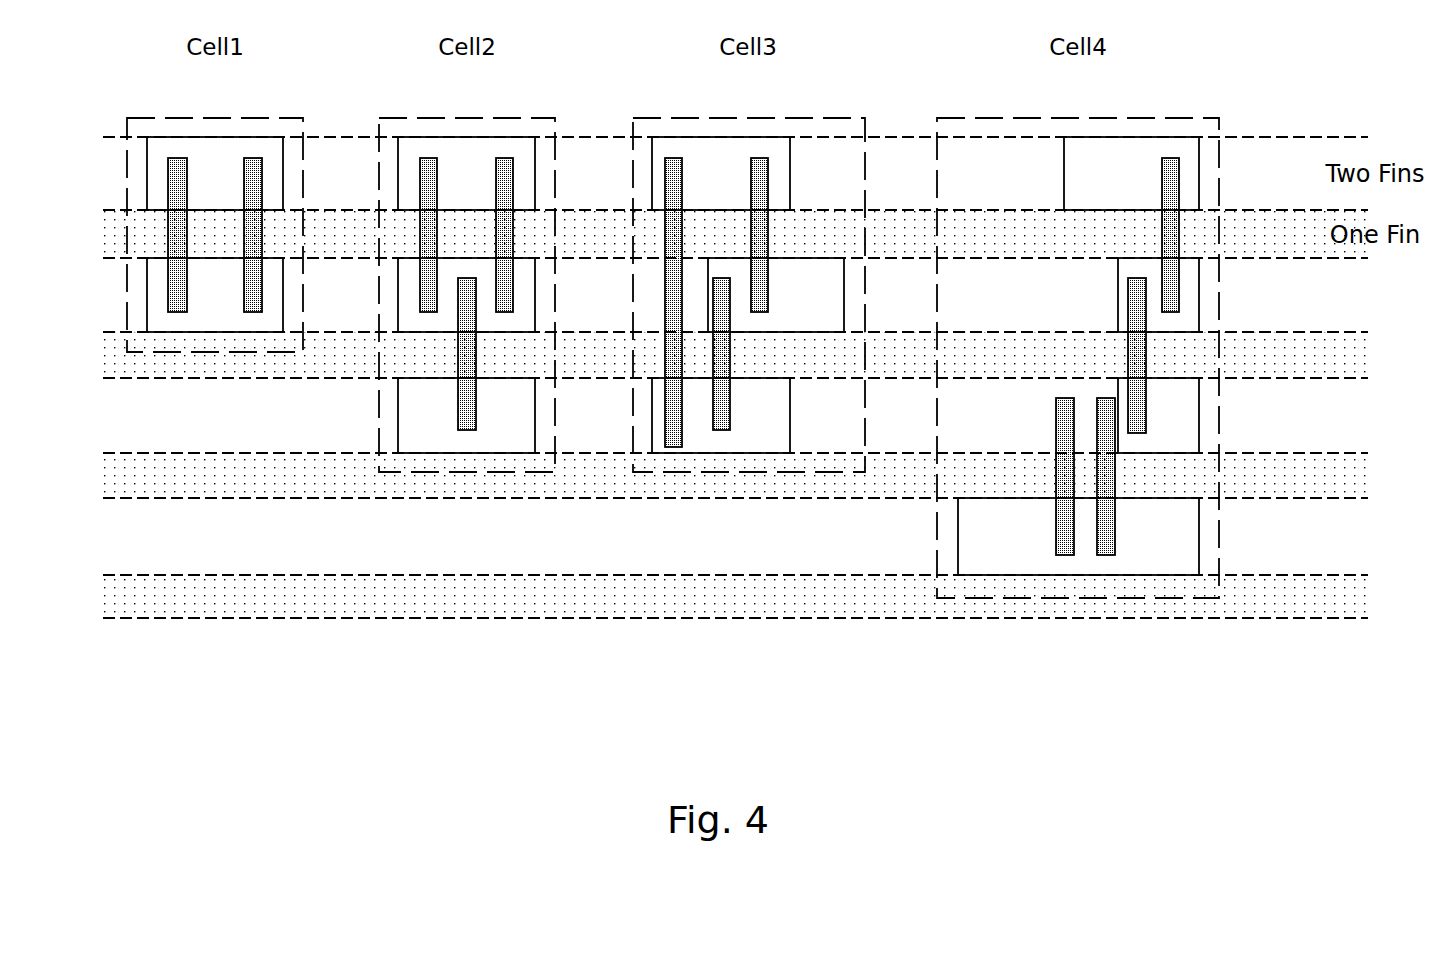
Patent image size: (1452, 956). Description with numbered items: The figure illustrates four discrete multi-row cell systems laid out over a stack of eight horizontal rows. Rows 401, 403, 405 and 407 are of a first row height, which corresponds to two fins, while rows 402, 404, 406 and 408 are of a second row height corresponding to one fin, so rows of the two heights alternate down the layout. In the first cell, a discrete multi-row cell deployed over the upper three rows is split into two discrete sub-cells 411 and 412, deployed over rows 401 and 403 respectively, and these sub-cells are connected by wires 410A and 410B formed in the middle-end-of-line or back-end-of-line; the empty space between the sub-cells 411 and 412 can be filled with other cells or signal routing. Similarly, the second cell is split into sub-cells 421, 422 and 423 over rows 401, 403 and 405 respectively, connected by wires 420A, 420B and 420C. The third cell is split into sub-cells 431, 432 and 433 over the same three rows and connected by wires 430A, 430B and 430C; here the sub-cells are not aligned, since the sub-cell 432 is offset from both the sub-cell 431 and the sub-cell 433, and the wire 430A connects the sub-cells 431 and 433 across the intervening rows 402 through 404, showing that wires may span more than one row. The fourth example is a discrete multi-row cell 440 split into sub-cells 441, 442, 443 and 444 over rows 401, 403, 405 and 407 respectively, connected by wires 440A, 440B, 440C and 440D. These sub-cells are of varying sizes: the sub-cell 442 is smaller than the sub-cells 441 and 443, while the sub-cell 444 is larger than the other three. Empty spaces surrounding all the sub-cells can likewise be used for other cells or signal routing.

The row 401 is at (1343, 150).
The row 402 is at (1343, 220).
The row 403 is at (1343, 295).
The row 404 is at (1343, 358).
The row 405 is at (1343, 418).
The row 406 is at (1343, 478).
The row 407 is at (1343, 541).
The row 408 is at (1343, 600).
The wire 410A is at (178, 158).
The wire 410B is at (253, 158).
The sub-cell 411 is at (147, 176).
The sub-cell 412 is at (147, 298).
The wire 420A is at (428, 158).
The wire 420B is at (505, 158).
The wire 420C is at (464, 432).
The sub-cell 421 is at (398, 176).
The sub-cell 422 is at (398, 298).
The sub-cell 423 is at (398, 418).
The wire 430A is at (673, 158).
The wire 430B is at (760, 158).
The wire 430C is at (720, 432).
The sub-cell 431 is at (652, 176).
The sub-cell 432 is at (844, 290).
The sub-cell 433 is at (652, 418).
The discrete multi-row cell 440 is at (298, 118).
The wire 440A is at (1175, 182).
The wire 440B is at (1146, 355).
The wire 440C is at (1065, 557).
The wire 440D is at (1106, 557).
The sub-cell 441 is at (1190, 152).
The sub-cell 442 is at (1190, 293).
The sub-cell 443 is at (1190, 420).
The sub-cell 444 is at (1190, 540).